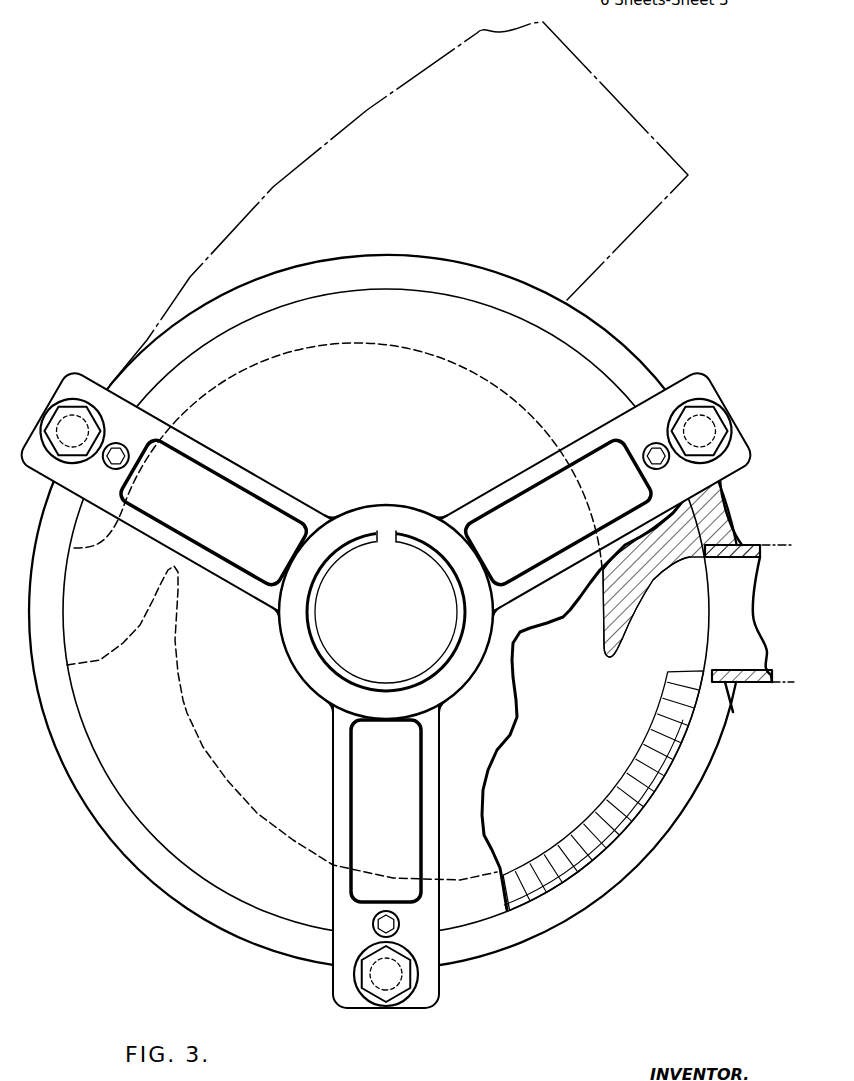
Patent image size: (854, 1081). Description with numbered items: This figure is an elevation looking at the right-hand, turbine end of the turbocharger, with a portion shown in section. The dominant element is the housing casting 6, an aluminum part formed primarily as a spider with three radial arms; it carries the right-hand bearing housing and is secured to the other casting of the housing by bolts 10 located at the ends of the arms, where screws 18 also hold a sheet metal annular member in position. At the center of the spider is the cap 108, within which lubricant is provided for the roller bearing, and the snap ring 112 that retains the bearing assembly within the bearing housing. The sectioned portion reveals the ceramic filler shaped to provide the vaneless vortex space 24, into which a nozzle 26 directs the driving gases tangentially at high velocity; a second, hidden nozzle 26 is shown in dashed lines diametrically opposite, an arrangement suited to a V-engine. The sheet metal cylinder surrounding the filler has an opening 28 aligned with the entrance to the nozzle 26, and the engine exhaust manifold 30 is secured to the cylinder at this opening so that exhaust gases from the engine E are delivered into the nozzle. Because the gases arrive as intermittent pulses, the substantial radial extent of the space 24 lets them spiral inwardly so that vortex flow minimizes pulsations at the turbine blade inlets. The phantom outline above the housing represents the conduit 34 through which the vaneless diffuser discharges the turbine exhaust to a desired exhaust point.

The housing casting 6 is at (287, 492).
The bolts 10 is at (70, 416).
The screws 18 is at (126, 445).
The vaneless vortex space 24 is at (565, 748).
The nozzles 26 is at (655, 639).
The openings 28 is at (700, 560).
The engine exhaust manifold 30 is at (750, 686).
The conduit 34 is at (383, 98).
The cap 108 is at (372, 607).
The snap ring 112 is at (441, 664).
The engine E is at (770, 543).